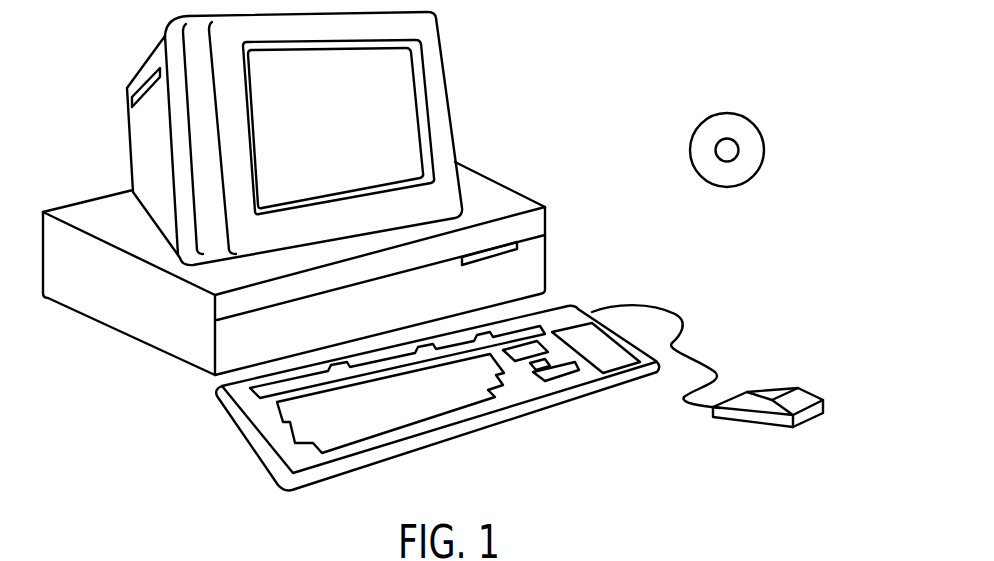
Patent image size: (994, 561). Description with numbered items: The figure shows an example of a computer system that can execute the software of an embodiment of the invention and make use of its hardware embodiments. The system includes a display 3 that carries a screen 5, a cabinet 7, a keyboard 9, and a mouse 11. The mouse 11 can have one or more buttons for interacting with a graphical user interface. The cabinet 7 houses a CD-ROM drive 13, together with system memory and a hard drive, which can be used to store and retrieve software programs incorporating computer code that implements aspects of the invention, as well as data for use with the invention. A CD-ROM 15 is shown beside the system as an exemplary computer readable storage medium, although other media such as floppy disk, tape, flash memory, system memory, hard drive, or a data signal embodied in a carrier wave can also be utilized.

The display 3 is at (452, 120).
The screen 5 is at (392, 78).
The cabinet 7 is at (162, 353).
The keyboard 9 is at (470, 440).
The mouse 11 is at (800, 388).
The CD-ROM drive 13 is at (517, 244).
The CD-ROM 15 is at (752, 118).